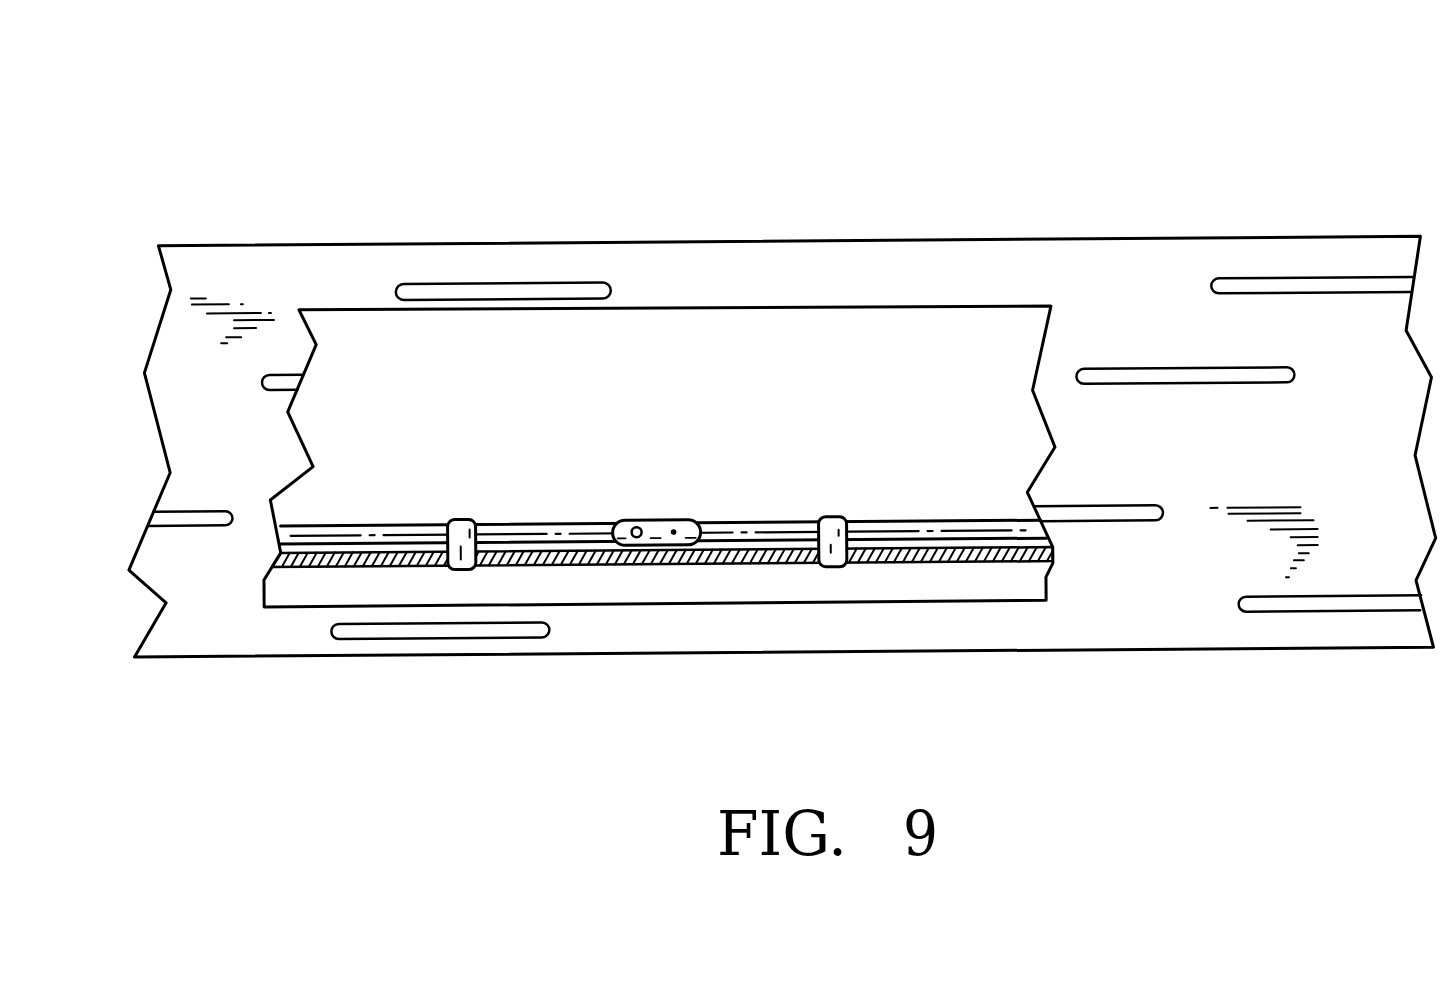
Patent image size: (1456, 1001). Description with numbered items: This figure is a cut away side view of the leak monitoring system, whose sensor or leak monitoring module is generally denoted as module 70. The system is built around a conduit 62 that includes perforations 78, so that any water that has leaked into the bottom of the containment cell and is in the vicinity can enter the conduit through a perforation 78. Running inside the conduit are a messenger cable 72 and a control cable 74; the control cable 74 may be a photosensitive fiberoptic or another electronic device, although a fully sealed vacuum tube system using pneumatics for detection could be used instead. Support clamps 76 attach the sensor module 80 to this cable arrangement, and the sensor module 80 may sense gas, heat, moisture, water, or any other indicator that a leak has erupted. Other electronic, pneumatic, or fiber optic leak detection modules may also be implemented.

The conduit 62 is at (1300, 469).
The leak monitoring module 70 is at (781, 368).
The messenger cable 72 is at (925, 558).
The control cable 74 is at (743, 534).
The support clamps 76 is at (440, 566).
The perforations 78 is at (1105, 517).
The sensor module 80 is at (653, 527).